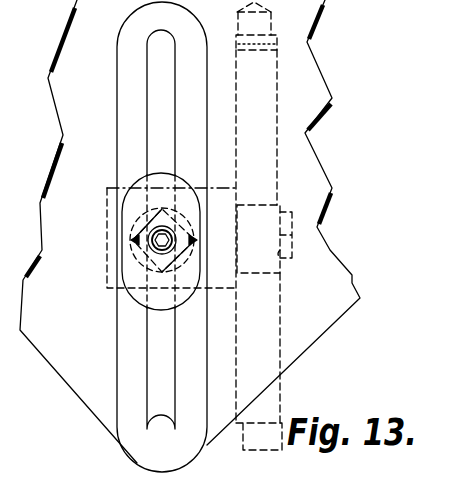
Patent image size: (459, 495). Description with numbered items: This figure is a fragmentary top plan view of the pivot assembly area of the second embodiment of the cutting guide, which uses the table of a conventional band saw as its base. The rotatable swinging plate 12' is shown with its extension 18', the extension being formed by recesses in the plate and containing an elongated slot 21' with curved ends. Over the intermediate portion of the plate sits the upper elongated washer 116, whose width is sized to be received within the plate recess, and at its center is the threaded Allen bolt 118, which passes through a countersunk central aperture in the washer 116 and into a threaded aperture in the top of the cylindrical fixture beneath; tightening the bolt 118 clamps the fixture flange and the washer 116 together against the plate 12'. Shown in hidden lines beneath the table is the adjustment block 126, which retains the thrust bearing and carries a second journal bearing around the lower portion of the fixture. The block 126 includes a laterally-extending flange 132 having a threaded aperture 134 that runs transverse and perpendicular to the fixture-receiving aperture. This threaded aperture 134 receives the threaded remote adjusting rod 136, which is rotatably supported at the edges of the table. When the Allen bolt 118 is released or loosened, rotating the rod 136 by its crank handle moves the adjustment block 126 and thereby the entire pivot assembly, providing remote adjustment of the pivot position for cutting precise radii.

The swinging plate 12' is at (190, 231).
The extension 18' is at (132, 240).
The slot 21' is at (104, 236).
The upper elongated washer 116 is at (132, 255).
The threaded Allen bolt 118 is at (165, 233).
The adjustment block 126 is at (106, 185).
The laterally-extending flange 132 is at (292, 212).
The threaded aperture 134 is at (294, 255).
The threaded remote adjusting rod 136 is at (255, 117).